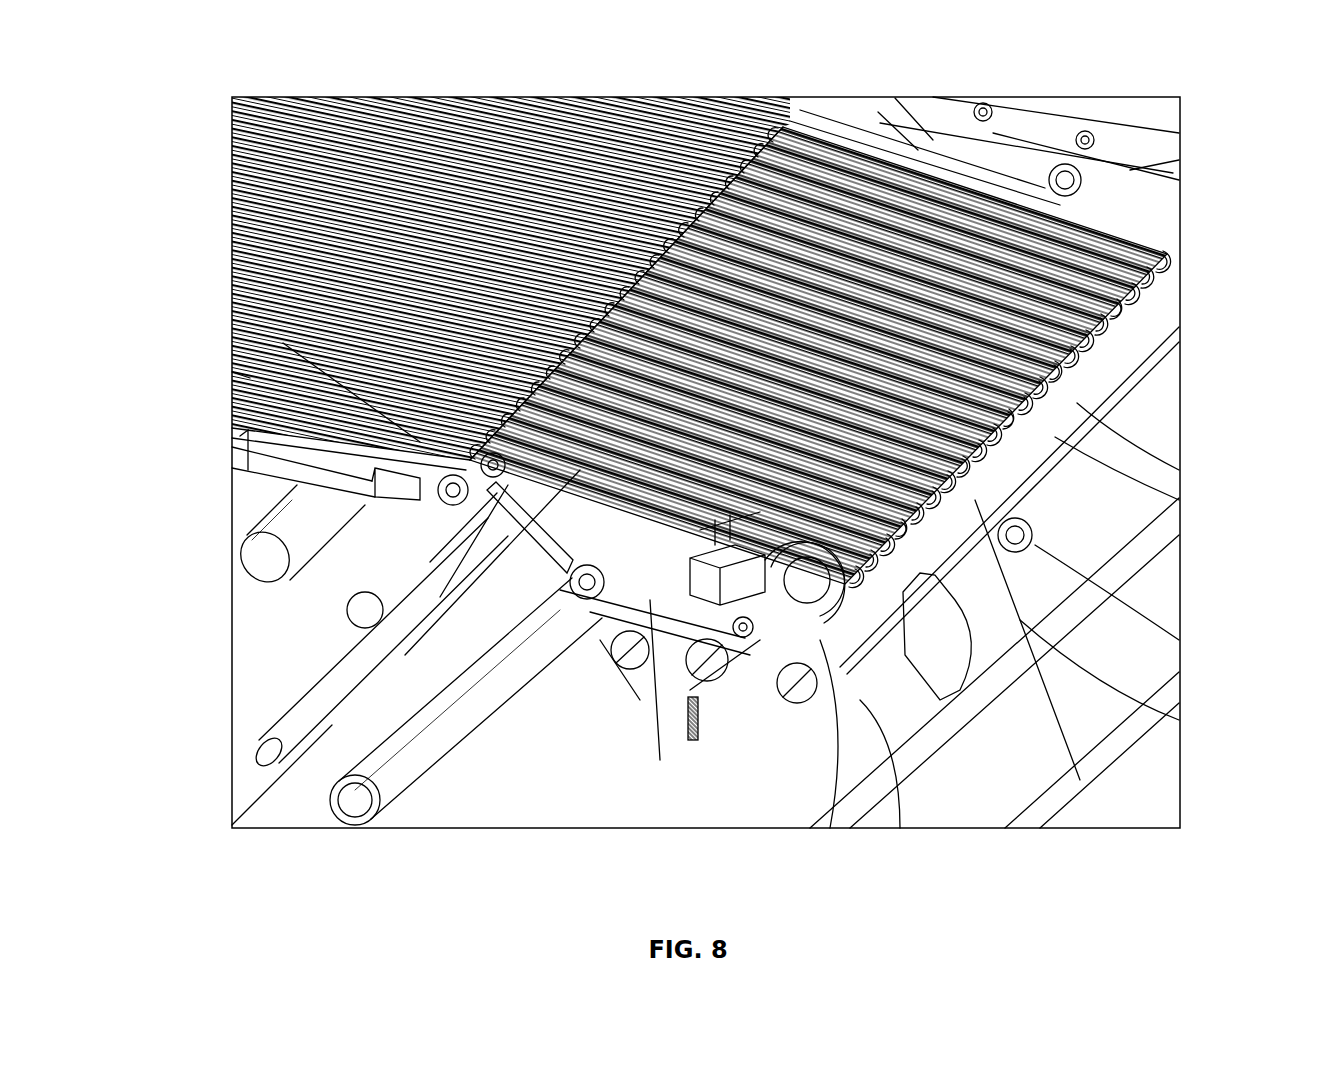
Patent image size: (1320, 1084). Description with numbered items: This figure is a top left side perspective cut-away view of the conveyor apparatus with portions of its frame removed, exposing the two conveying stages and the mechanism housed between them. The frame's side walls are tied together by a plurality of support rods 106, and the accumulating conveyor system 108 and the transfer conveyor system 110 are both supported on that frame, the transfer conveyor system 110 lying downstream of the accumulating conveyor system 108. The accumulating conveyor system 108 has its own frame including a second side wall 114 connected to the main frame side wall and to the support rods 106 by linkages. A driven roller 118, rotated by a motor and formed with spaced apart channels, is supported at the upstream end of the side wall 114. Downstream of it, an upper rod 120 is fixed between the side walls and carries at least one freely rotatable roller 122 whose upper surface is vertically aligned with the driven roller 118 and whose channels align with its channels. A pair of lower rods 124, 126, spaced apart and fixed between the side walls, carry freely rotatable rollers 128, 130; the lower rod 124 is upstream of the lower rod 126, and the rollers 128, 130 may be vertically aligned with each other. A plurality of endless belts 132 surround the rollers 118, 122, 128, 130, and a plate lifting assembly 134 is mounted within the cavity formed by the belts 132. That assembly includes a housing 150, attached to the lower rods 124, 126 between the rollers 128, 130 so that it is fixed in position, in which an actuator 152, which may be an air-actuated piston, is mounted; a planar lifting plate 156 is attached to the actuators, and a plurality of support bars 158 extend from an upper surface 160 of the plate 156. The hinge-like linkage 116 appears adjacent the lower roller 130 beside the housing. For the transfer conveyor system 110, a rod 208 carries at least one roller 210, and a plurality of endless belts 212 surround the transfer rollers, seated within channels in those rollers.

The support rods 106 is at (1055, 437).
The accumulating conveyor system 108 is at (1098, 195).
The transfer conveyor system 110 is at (732, 124).
The second side wall 114 is at (1130, 170).
The link arm 116 is at (556, 561).
The driven roller 118 is at (895, 725).
The upper rod 120 is at (240, 372).
The roller 122 is at (435, 452).
The lower rod 124 is at (743, 640).
The lower rod 126 is at (520, 610).
The roller 128 is at (805, 625).
The roller 130 is at (568, 587).
The endless belts 132 is at (1113, 347).
The plate lifting assembly 134 is at (560, 640).
The housing 150 is at (600, 650).
The actuator 152 is at (700, 650).
The lifting plate 156 is at (740, 548).
The support bars 158 is at (923, 197).
The upper surface 160 is at (1020, 620).
The rod 208 is at (300, 575).
The roller 210 is at (300, 652).
The endless belts 212 is at (533, 133).